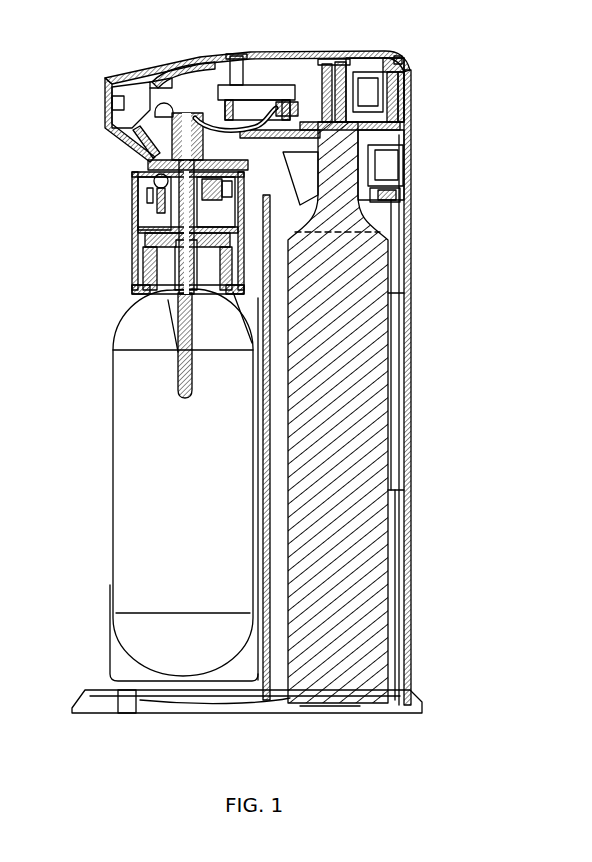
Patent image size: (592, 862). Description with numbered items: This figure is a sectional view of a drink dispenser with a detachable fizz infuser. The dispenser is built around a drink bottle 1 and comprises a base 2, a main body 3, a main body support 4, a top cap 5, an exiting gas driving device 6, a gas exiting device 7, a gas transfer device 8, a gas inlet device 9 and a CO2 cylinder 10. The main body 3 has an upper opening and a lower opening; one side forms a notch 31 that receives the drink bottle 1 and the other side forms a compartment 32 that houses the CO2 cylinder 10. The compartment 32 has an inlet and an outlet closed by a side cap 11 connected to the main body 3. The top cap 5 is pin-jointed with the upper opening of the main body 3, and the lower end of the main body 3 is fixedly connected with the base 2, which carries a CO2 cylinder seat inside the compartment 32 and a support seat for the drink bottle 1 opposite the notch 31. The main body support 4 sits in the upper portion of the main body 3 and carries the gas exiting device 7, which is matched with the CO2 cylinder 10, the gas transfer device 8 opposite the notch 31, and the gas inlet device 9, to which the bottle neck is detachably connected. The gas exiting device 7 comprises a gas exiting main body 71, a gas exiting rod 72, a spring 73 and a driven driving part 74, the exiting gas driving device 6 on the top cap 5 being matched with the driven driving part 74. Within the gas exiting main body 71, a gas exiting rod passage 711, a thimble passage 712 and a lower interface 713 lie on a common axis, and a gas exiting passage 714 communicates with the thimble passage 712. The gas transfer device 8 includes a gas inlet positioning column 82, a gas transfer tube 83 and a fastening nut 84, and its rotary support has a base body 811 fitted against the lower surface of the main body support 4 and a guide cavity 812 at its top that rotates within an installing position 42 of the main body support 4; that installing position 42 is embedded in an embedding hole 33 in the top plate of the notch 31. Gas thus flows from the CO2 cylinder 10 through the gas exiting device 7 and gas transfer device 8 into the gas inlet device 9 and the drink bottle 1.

The drink bottle 1 is at (133, 578).
The base 2 is at (228, 705).
The main body 3 is at (415, 110).
The main body support 4 is at (300, 157).
The top cap 5 is at (345, 55).
The exiting gas driving device 6 is at (218, 54).
The gas exiting device 7 is at (413, 90).
The gas transfer device 8 is at (178, 118).
The gas inlet device 9 is at (128, 221).
The CO2 cylinder 10 is at (351, 484).
The side cap 11 is at (408, 562).
The notch of the drink bottle 31 is at (262, 524).
The compartment for the CO2 cylinder 32 is at (400, 403).
The embedding hole 33 is at (150, 148).
The installing position 42 is at (230, 68).
The gas exiting main body 71 is at (395, 128).
The gas exiting rod 72 is at (390, 60).
The spring 73 is at (414, 100).
The driven driving part 74 is at (283, 92).
The gas inlet positioning column 82 is at (140, 130).
The gas transfer tube 83 is at (165, 72).
The fastening nut 84 is at (112, 95).
The gas exiting rod passage 711 is at (415, 68).
The thimble passage 712 is at (388, 145).
The lower interface 713 is at (405, 192).
The gas exiting passage 714 is at (327, 62).
The base body 811 is at (150, 168).
The guide cavity 812 is at (163, 108).